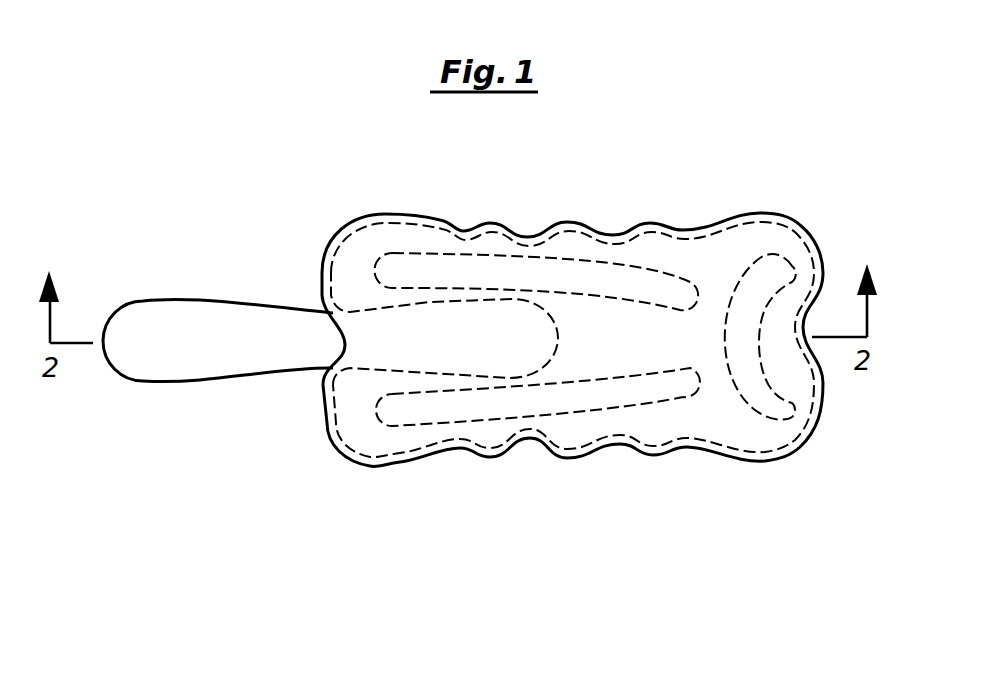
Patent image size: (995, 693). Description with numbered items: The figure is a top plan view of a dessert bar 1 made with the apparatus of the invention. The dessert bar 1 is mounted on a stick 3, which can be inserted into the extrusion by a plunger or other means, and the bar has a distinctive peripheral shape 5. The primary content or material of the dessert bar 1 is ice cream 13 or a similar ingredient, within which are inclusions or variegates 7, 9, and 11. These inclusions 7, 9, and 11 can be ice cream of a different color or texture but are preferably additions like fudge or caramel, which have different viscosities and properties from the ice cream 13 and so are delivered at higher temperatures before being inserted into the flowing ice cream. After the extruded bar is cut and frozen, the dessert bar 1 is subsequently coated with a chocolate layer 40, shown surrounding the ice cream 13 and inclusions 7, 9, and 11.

The dessert bar 1 is at (677, 127).
The stick 3 is at (220, 338).
The peripheral shape 5 is at (572, 211).
The inclusion 7 is at (478, 407).
The inclusion 9 is at (770, 398).
The inclusion 11 is at (460, 268).
The ice cream 13 is at (612, 358).
The chocolate layer 40 is at (650, 223).